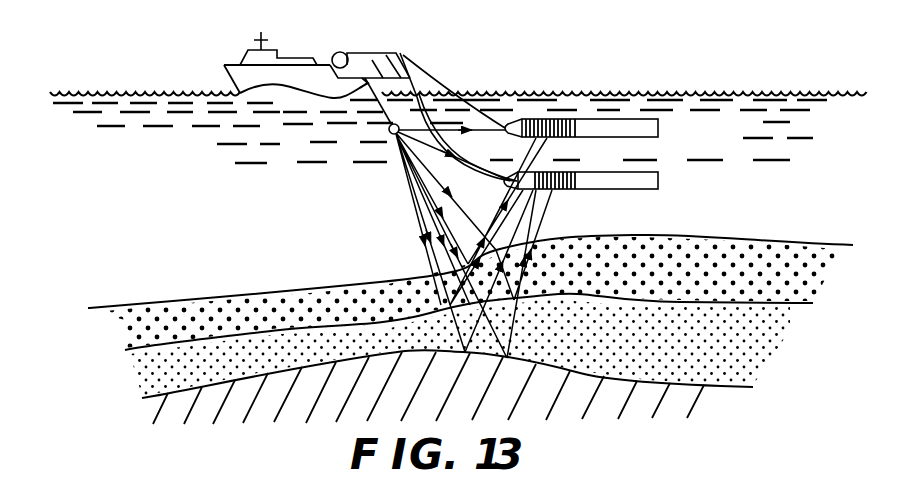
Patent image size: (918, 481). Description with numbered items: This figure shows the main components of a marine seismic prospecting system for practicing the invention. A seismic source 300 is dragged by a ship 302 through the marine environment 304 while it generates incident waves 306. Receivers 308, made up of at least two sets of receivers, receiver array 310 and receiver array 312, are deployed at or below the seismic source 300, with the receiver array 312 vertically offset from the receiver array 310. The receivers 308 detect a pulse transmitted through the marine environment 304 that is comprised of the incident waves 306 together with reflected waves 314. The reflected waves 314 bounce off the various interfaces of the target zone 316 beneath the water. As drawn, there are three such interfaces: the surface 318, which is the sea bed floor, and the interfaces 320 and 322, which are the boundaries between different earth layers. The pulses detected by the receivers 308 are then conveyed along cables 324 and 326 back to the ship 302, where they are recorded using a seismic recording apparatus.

The seismic source 300 is at (390, 131).
The ship 302 is at (297, 55).
The marine environment 304 is at (170, 162).
The incident waves 306 is at (417, 97).
The receivers 308 is at (676, 114).
The receiver array 310 is at (658, 128).
The receiver array 312 is at (658, 181).
The reflected waves 314 is at (552, 214).
The target zone 316 is at (247, 290).
The surface 318 is at (753, 237).
The interface 320 is at (625, 307).
The interface 322 is at (577, 372).
The cable 324 is at (400, 58).
The cable 326 is at (443, 182).